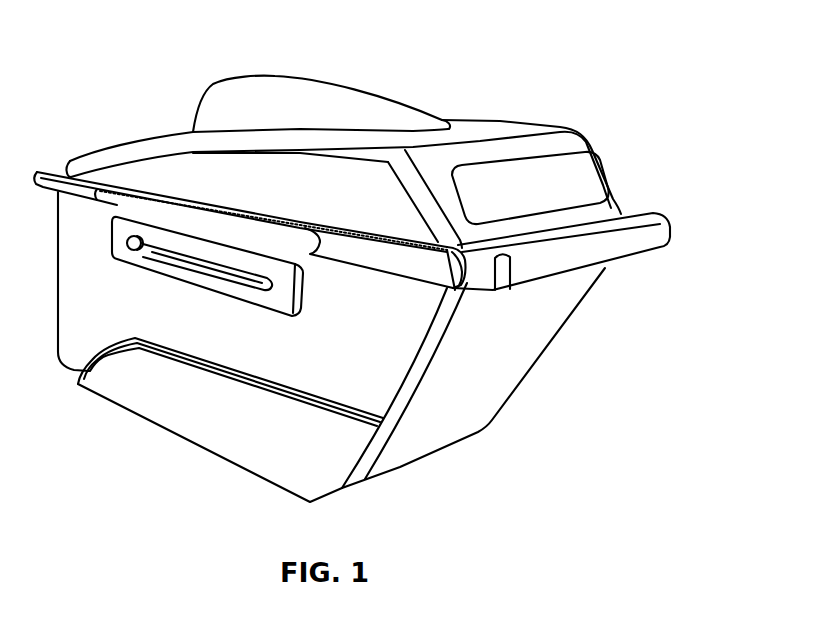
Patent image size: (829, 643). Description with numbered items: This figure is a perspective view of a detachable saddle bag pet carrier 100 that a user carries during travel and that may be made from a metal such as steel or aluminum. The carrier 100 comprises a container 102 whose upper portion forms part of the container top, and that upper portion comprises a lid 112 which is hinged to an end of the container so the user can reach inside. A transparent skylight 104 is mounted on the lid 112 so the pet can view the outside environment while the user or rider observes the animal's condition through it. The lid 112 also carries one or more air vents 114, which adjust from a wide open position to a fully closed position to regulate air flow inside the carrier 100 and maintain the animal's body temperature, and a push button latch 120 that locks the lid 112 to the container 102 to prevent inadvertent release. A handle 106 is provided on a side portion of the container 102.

The detachable saddle bag pet carrier 100 is at (588, 55).
The container 102 is at (510, 363).
The transparent skylight 104 is at (355, 86).
The handle 106 is at (215, 222).
The lid 112 is at (565, 141).
The air vents 114 is at (563, 183).
The push button latch 120 is at (150, 233).